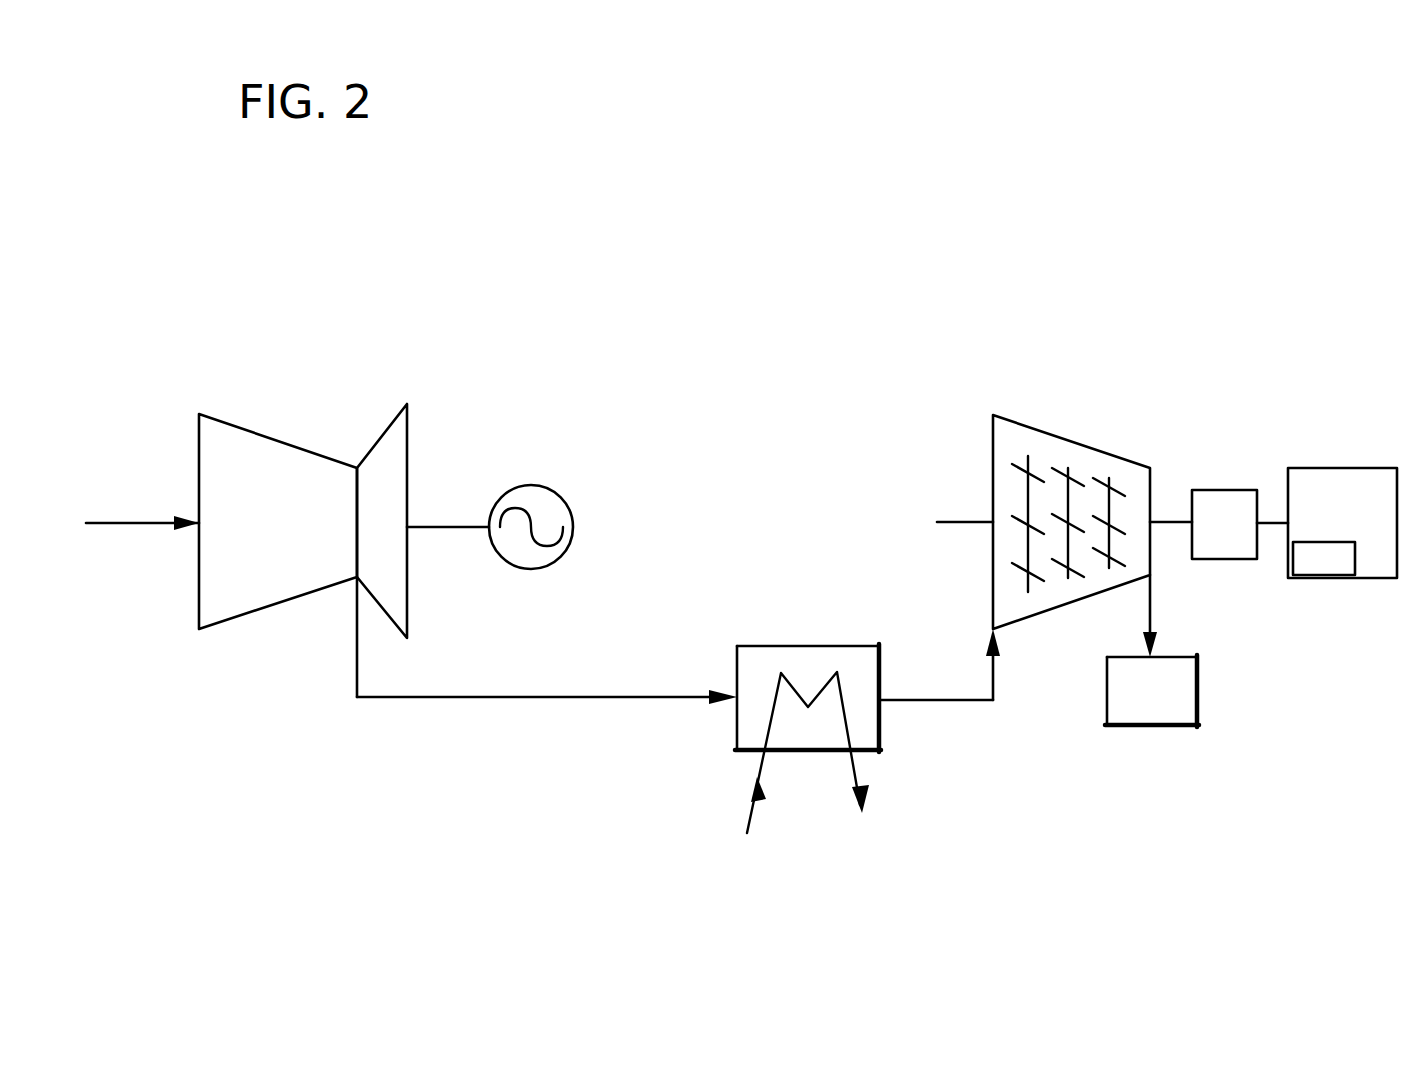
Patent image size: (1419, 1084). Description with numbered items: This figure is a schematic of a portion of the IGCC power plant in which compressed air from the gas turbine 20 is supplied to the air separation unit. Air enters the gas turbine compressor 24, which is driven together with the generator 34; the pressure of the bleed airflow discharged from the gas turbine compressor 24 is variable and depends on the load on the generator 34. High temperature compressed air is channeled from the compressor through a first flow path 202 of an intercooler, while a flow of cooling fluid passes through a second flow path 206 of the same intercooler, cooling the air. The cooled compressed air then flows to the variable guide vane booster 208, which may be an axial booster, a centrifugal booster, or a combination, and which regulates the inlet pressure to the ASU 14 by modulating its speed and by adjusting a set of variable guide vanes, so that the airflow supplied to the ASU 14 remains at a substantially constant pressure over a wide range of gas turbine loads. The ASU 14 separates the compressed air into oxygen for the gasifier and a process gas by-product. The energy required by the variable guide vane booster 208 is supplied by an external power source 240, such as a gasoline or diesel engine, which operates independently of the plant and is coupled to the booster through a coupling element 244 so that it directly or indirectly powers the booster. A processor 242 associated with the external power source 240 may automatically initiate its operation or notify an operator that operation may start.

The ASU 14 is at (1168, 703).
The gas turbine 20 is at (287, 564).
The gas turbine compressor 24 is at (297, 540).
The generator 34 is at (555, 562).
The first flow path 202 is at (486, 695).
The second flow path 206 is at (760, 768).
The variable guide vane booster 208 is at (1025, 425).
The external power source 240 is at (1370, 534).
The processor 242 is at (1324, 558).
The sensor 244 is at (1224, 490).